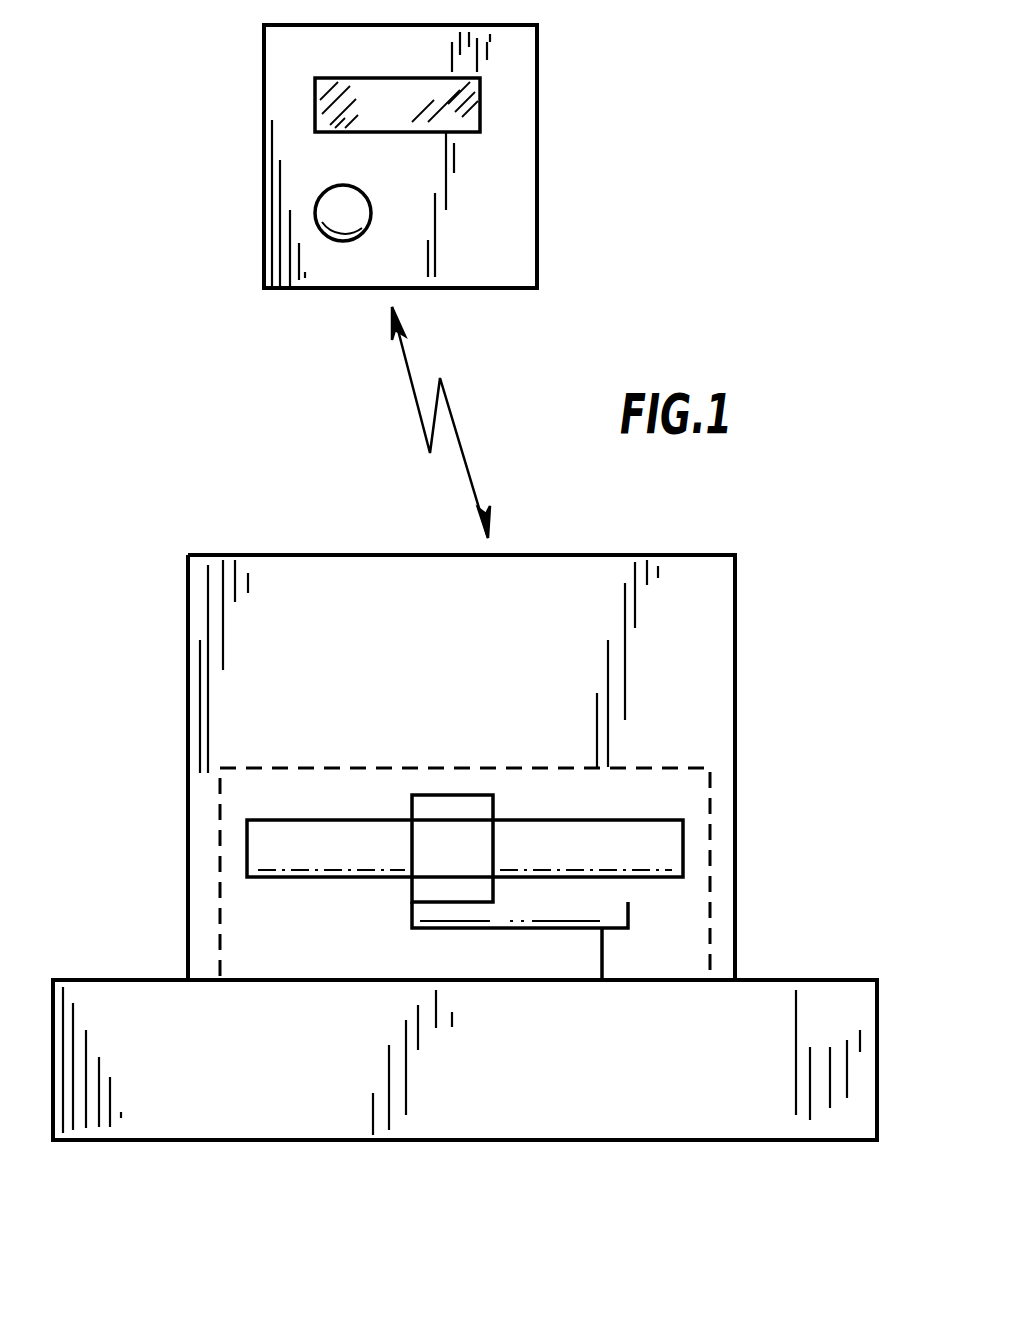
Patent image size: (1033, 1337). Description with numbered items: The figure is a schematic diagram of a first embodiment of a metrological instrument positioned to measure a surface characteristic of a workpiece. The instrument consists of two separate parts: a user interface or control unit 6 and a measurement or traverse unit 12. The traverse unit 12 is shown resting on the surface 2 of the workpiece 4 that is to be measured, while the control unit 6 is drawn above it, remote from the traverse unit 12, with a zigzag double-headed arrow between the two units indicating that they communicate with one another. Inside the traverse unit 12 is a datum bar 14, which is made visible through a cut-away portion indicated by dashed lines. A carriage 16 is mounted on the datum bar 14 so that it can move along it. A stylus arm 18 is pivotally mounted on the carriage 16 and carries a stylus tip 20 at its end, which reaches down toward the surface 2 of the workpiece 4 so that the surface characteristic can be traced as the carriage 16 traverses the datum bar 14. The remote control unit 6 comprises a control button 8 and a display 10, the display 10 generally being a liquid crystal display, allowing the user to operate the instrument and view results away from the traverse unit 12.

The surface 2 is at (815, 980).
The workpiece 4 is at (770, 1075).
The control unit 6 is at (552, 148).
The control button 8 is at (328, 208).
The display 10 is at (458, 110).
The traverse unit 12 is at (748, 662).
The datum bar 14 is at (667, 840).
The carriage 16 is at (452, 805).
The stylus arm 18 is at (518, 917).
The stylus tip 20 is at (606, 960).